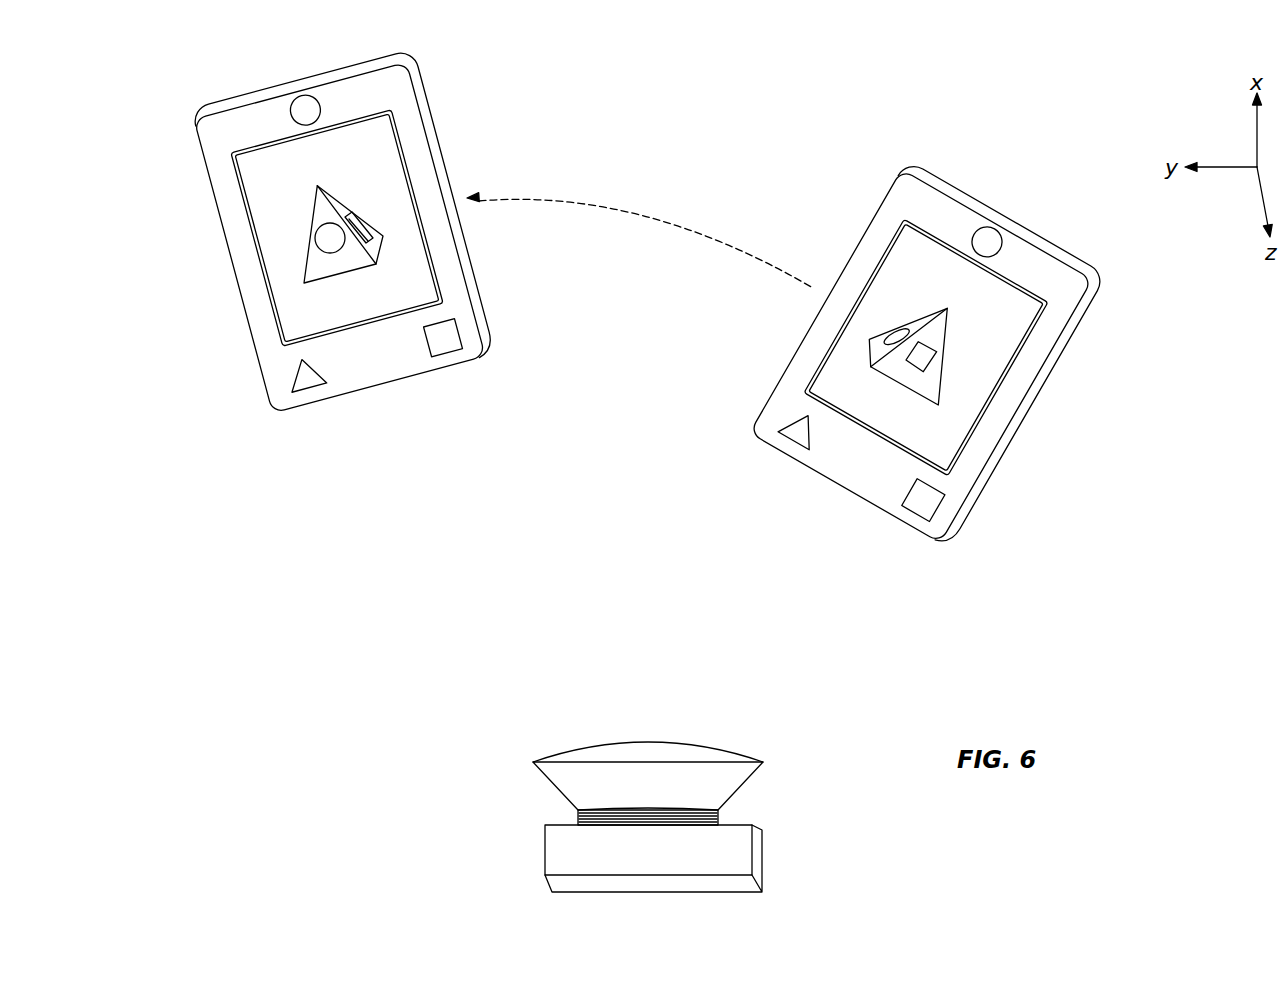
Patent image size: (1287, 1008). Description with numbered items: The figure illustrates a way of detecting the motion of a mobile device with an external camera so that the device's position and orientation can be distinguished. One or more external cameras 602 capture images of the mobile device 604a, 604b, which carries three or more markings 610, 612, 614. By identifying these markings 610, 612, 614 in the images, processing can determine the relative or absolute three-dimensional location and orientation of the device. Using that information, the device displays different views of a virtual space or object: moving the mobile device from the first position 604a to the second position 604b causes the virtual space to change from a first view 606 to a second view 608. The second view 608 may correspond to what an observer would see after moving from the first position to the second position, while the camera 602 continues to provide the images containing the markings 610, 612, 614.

The external camera 602 is at (761, 848).
The mobile device in first position 604a is at (861, 239).
The mobile device in second position 604b is at (233, 280).
The first view 606 is at (998, 381).
The second view 608 is at (395, 181).
The marking 610 is at (292, 392).
The marking 612 is at (448, 352).
The marking 614 is at (293, 98).